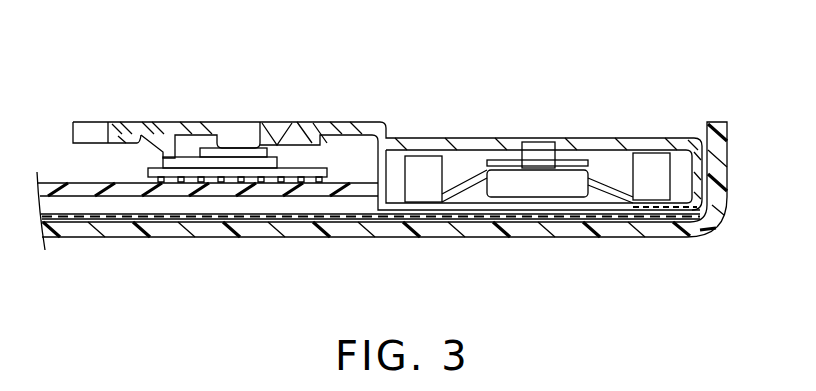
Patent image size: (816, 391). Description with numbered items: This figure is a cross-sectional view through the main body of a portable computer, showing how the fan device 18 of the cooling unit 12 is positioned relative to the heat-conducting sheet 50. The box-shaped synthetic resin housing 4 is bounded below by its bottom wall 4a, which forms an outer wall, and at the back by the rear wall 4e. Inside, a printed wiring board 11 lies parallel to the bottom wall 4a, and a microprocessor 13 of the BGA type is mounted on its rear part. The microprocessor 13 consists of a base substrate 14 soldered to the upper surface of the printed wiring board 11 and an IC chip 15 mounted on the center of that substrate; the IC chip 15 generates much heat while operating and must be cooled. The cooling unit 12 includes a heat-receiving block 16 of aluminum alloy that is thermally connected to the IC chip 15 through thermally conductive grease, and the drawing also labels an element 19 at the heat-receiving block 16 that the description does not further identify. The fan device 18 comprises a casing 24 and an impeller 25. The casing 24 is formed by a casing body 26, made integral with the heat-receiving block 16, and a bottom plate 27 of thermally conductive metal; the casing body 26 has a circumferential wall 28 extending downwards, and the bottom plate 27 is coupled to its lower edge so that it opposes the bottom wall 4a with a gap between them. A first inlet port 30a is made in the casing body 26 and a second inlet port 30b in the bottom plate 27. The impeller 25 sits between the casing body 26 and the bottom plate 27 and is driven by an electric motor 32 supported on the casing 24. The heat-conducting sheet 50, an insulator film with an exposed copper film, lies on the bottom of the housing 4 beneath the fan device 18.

The housing 4 is at (45, 250).
The bottom wall 4a is at (263, 226).
The rear wall 4e is at (718, 163).
The printed wiring board 11 is at (131, 196).
The cooling unit 12 is at (678, 133).
The microprocessor 13 is at (243, 66).
The base substrate 14 is at (176, 157).
The IC chip 15 is at (224, 165).
The heat-receiving block 16 is at (323, 127).
The fan device 18 is at (503, 200).
The bonding portion 19 is at (277, 135).
The casing 24 is at (572, 140).
The impeller 25 is at (555, 185).
The casing body 26 is at (412, 143).
The bottom plate 27 is at (676, 212).
The circumferential wall 28 is at (388, 177).
The first inlet port 30a is at (466, 143).
The second inlet port 30b is at (605, 228).
The electric motor 32 is at (537, 153).
The heat-conducting sheet 50 is at (193, 222).